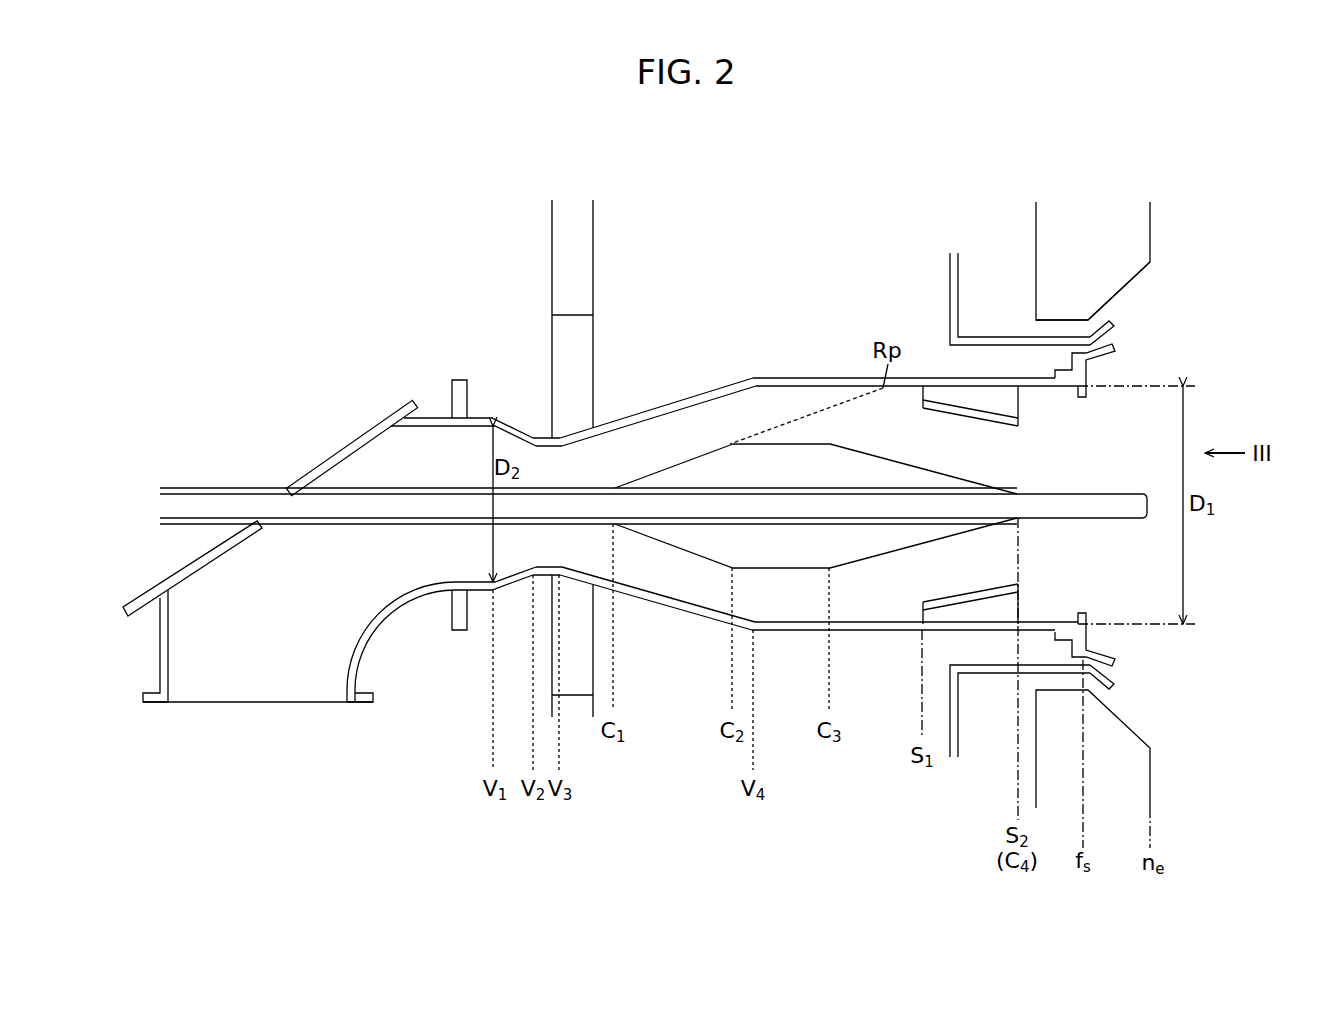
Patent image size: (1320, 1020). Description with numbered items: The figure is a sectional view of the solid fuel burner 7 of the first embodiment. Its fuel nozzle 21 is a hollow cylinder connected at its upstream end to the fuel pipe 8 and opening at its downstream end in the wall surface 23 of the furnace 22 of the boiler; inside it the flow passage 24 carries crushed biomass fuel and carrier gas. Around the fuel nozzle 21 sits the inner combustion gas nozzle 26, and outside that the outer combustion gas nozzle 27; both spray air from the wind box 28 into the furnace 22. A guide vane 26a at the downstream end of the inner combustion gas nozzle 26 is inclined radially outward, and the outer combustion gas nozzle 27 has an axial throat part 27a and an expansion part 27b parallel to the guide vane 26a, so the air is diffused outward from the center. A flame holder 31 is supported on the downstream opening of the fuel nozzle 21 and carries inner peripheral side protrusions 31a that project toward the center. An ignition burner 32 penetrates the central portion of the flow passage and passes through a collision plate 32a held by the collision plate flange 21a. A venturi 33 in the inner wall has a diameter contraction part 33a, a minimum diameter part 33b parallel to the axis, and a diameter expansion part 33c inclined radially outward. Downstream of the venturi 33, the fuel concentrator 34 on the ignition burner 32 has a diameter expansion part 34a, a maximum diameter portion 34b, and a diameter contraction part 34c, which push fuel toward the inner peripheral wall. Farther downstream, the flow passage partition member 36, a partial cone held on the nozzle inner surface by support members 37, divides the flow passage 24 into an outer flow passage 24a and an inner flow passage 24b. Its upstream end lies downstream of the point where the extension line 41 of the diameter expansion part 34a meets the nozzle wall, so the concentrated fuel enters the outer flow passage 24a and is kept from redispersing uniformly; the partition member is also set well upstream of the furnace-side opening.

The solid fuel burner 7 is at (303, 230).
The fuel pipe 8 is at (206, 718).
The fuel nozzle 21 is at (818, 377).
The collision plate flange 21a is at (141, 607).
The furnace 22 is at (1230, 264).
The wall surface 23 is at (1150, 204).
The flow passage 24 is at (318, 598).
The outer flow passage 24a is at (942, 393).
The inner flow passage 24b is at (944, 451).
The inner combustion gas nozzle 26 is at (992, 336).
The guide vane 26a is at (1112, 327).
The outer combustion gas nozzle 27 is at (1050, 226).
The throat part 27a is at (1060, 318).
The expansion part 27b is at (1132, 278).
The wind box 28 is at (805, 251).
The flame holder 31 is at (1092, 370).
The inner peripheral side protrusions 31a is at (1085, 398).
The ignition burner 32 is at (222, 487).
The collision plate 32a is at (136, 596).
The venturi 33 is at (520, 426).
The diameter contraction part 33a is at (498, 417).
The minimum diameter part 33b is at (543, 432).
The diameter expansion part 33c is at (652, 407).
The fuel concentrator 34 is at (826, 484).
The diameter expansion part 34a is at (677, 463).
The maximum diameter portion 34b is at (767, 446).
The diameter contraction part 34c is at (893, 462).
The flow passage partition member 36 is at (1007, 424).
The support members 37 is at (1020, 408).
The extension line 41 is at (805, 418).